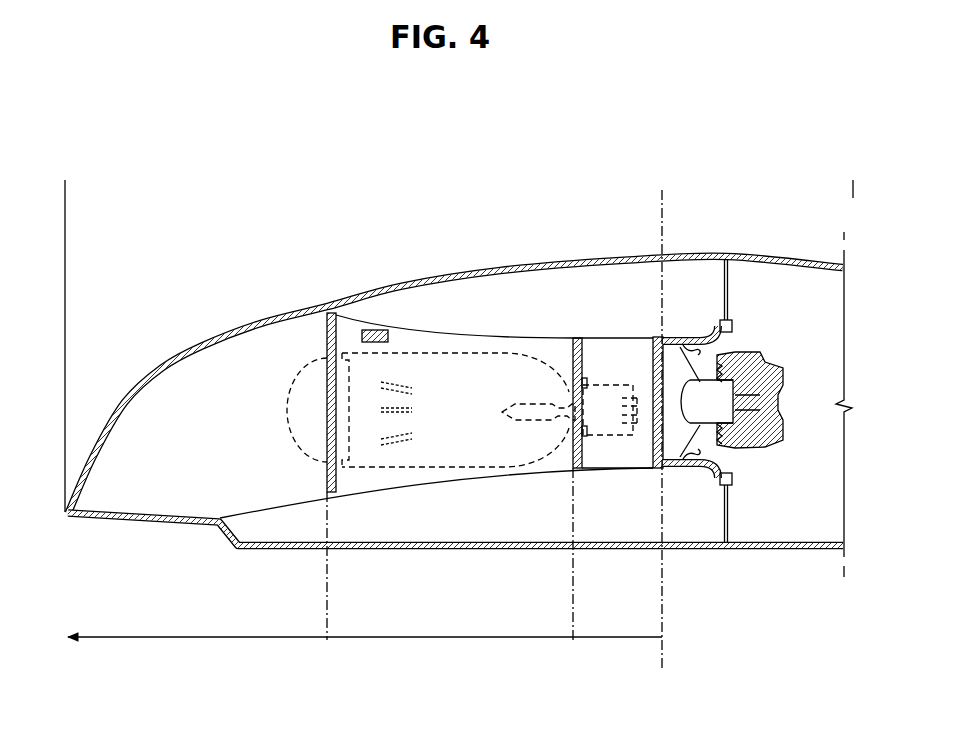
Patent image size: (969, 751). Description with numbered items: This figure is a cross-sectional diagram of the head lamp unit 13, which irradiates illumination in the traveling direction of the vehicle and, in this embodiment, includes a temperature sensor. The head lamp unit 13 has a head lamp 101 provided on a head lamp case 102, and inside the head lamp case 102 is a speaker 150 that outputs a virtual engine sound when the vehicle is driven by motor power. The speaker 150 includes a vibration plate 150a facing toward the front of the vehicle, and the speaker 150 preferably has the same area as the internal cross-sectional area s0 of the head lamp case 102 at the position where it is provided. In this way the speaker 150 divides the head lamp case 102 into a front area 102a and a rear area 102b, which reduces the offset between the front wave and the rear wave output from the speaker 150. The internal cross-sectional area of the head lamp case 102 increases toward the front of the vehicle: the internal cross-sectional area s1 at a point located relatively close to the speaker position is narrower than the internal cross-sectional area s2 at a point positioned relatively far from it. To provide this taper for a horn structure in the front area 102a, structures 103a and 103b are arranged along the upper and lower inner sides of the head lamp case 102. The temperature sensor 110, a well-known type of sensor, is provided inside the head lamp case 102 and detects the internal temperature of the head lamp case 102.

The head lamp unit 13 is at (268, 272).
The head lamp 101 is at (433, 353).
The head lamp case 102 is at (459, 371).
The front area 102a is at (662, 190).
The rear area 102b is at (852, 190).
The taper structure 103a is at (583, 290).
The taper structure 103b is at (497, 505).
The temperature sensor 110 is at (372, 329).
The speaker 150 is at (755, 353).
The vibration plate 150a is at (703, 427).
The internal cross-sectional area s0 is at (656, 336).
The internal cross-sectional area s1 is at (576, 338).
The internal cross-sectional area s2 is at (331, 313).